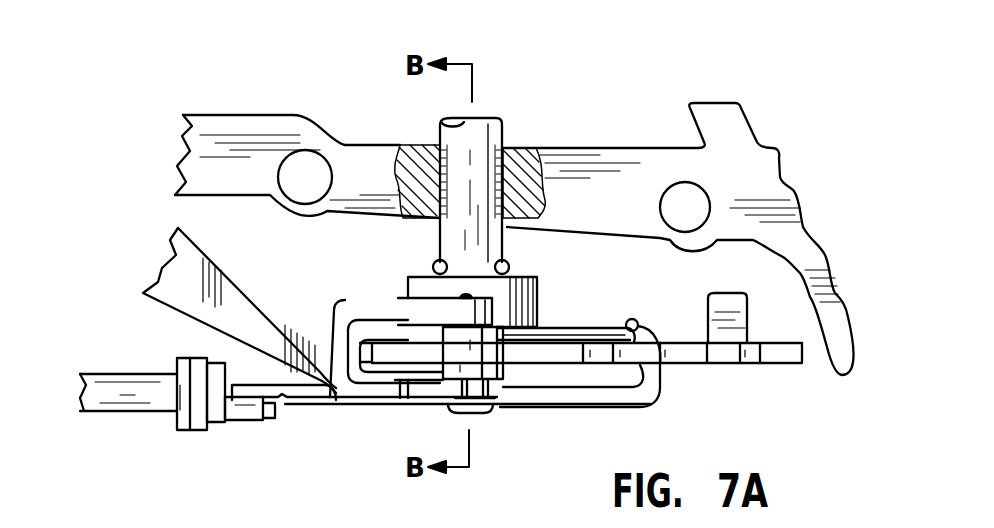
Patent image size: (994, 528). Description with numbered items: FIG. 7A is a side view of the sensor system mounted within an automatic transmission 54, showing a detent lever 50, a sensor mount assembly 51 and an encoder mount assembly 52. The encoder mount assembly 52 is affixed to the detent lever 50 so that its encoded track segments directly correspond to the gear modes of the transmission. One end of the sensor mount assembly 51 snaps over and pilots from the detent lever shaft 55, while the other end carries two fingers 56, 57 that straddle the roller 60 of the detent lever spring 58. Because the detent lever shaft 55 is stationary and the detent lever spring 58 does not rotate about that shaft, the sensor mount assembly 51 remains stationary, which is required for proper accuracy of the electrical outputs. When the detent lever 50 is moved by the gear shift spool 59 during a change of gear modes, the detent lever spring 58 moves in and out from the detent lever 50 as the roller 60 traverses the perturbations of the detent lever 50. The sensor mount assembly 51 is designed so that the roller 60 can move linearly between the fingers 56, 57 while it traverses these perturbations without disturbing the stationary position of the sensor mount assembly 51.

The detent lever 50 is at (753, 362).
The sensor mount assembly 51 is at (420, 285).
The encoder mount assembly 52 is at (613, 335).
The automatic transmission 54 is at (757, 140).
The detent lever shaft 55 is at (487, 163).
The finger 56 is at (418, 333).
The finger 57 is at (528, 333).
The detent lever spring 58 is at (248, 306).
The gear shift spool 59 is at (198, 362).
The roller 60 is at (480, 362).